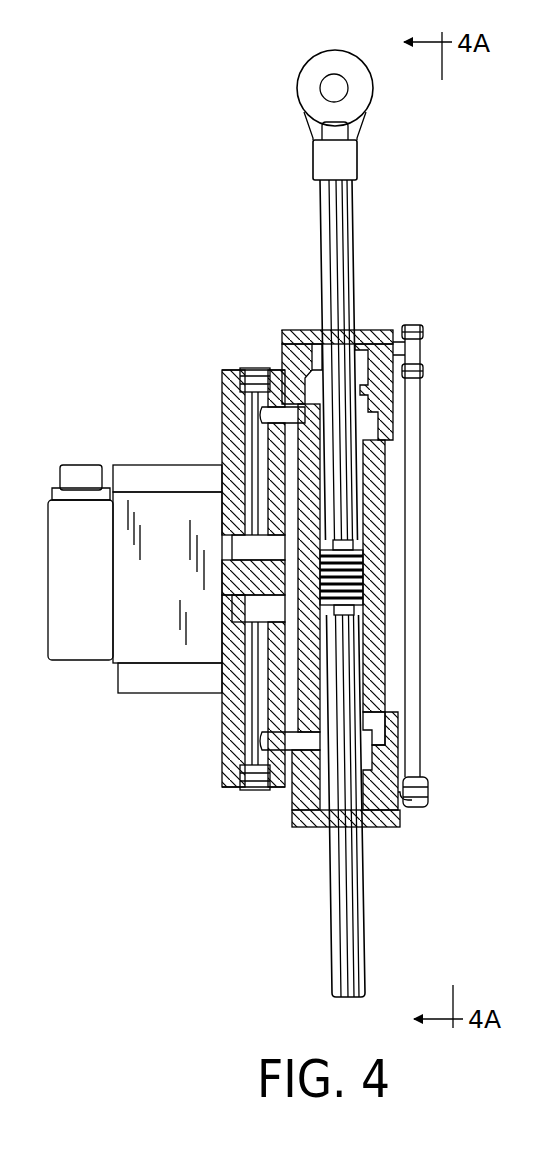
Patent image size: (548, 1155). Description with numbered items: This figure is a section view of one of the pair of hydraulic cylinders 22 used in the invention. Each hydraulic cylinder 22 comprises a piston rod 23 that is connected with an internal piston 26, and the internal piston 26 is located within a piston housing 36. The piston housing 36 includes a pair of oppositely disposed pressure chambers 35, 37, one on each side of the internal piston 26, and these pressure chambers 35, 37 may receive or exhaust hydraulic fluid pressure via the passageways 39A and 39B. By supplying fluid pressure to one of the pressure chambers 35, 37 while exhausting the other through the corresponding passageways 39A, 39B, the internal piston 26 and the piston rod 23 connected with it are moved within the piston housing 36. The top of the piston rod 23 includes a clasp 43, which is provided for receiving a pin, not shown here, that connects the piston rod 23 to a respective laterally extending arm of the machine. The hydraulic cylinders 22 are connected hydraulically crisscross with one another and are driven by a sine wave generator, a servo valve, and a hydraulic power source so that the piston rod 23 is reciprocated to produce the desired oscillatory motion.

The hydraulic cylinder 22 is at (397, 226).
The piston rod 23 is at (340, 285).
The internal piston 26 is at (358, 572).
The pressure chamber 35 is at (363, 415).
The piston housing 36 is at (388, 768).
The pressure chamber 37 is at (375, 735).
The passageway 39A is at (232, 548).
The passageway 39B is at (250, 715).
The clasp 43 is at (300, 68).